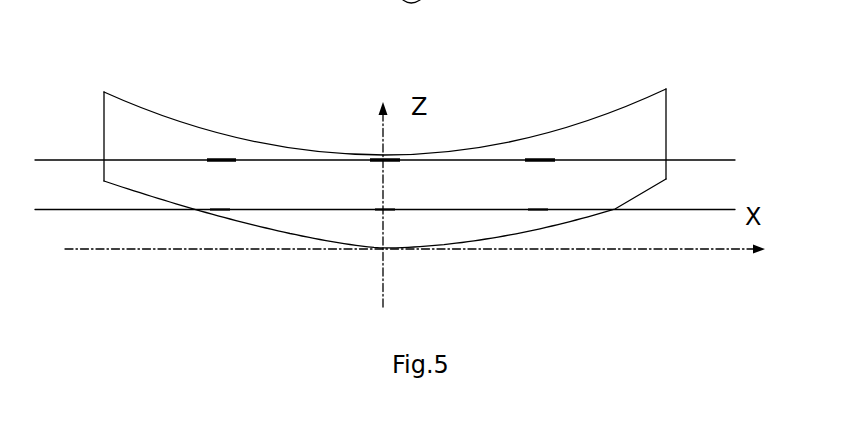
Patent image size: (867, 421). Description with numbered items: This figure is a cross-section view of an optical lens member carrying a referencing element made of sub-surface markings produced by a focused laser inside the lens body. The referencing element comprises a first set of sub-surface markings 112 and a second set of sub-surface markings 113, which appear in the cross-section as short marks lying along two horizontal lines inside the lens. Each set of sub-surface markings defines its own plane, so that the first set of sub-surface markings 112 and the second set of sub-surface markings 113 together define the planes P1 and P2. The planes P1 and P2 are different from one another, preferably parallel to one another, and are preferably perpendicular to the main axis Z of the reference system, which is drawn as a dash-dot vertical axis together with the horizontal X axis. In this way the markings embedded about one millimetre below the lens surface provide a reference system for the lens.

The first set of sub-surface markings 112 is at (540, 210).
The second set of sub-surface markings 113 is at (550, 157).
The plane P1 is at (713, 158).
The plane P2 is at (82, 210).